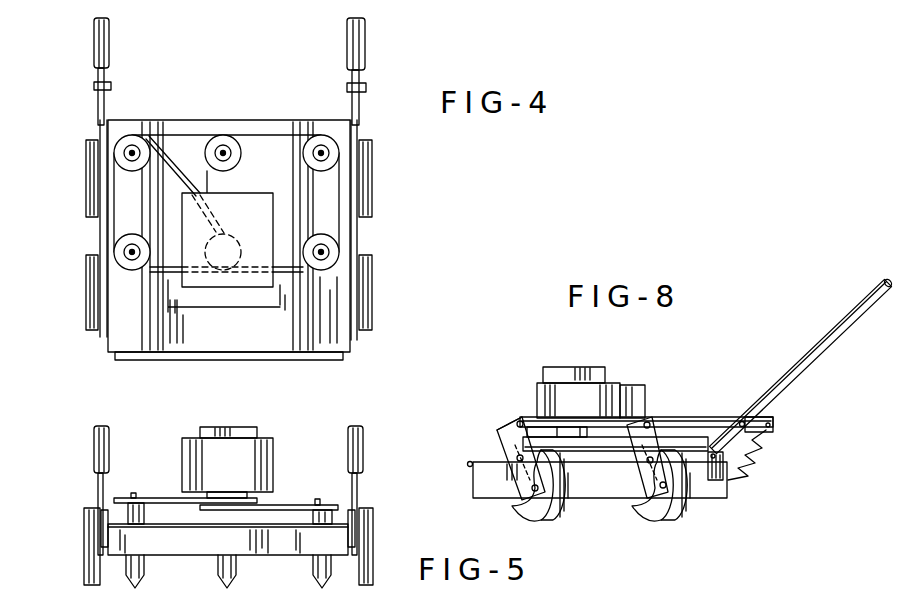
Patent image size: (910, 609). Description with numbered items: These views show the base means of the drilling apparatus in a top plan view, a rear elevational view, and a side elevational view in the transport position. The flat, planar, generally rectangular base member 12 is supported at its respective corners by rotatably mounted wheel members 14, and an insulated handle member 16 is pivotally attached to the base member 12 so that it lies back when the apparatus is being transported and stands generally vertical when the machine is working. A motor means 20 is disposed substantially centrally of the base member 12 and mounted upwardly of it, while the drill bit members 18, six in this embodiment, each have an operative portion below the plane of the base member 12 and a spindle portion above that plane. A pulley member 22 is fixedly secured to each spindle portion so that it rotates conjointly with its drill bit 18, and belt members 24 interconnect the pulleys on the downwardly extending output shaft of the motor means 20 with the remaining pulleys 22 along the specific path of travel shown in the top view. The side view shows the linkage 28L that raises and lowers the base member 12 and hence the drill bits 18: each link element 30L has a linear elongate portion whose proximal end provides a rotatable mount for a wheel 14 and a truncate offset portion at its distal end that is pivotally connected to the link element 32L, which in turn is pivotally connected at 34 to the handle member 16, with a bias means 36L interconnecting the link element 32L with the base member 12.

In FIG. 4, the base member 12 is at (232, 343).
In FIG. 5, the base member 12 is at (196, 552).
In FIG. 8, the base member 12 is at (503, 490).
In FIG. 4, the wheel members 14 is at (86, 162).
In FIG. 5, the wheel members 14 is at (84, 517).
In FIG. 8, the wheel members 14 is at (632, 511).
In FIG. 4, the handle member 16 is at (94, 44).
In FIG. 8, the handle member 16 is at (811, 356).
In FIG. 5, the drill bit members 18 is at (213, 573).
In FIG. 4, the motor means 20 is at (280, 211).
In FIG. 5, the motor means 20 is at (236, 480).
In FIG. 8, the motor means 20 is at (592, 413).
In FIG. 4, the pulley member 22 is at (133, 171).
In FIG. 5, the pulley member 22 is at (257, 501).
In FIG. 4, the belt members 24 is at (193, 170).
In FIG. 8, the linkage 28L is at (713, 398).
In FIG. 8, the link element 30L is at (503, 443).
In FIG. 8, the link element 32L is at (533, 418).
In FIG. 8, the pivotal connection 34 is at (742, 421).
In FIG. 8, the bias means 36L is at (752, 463).